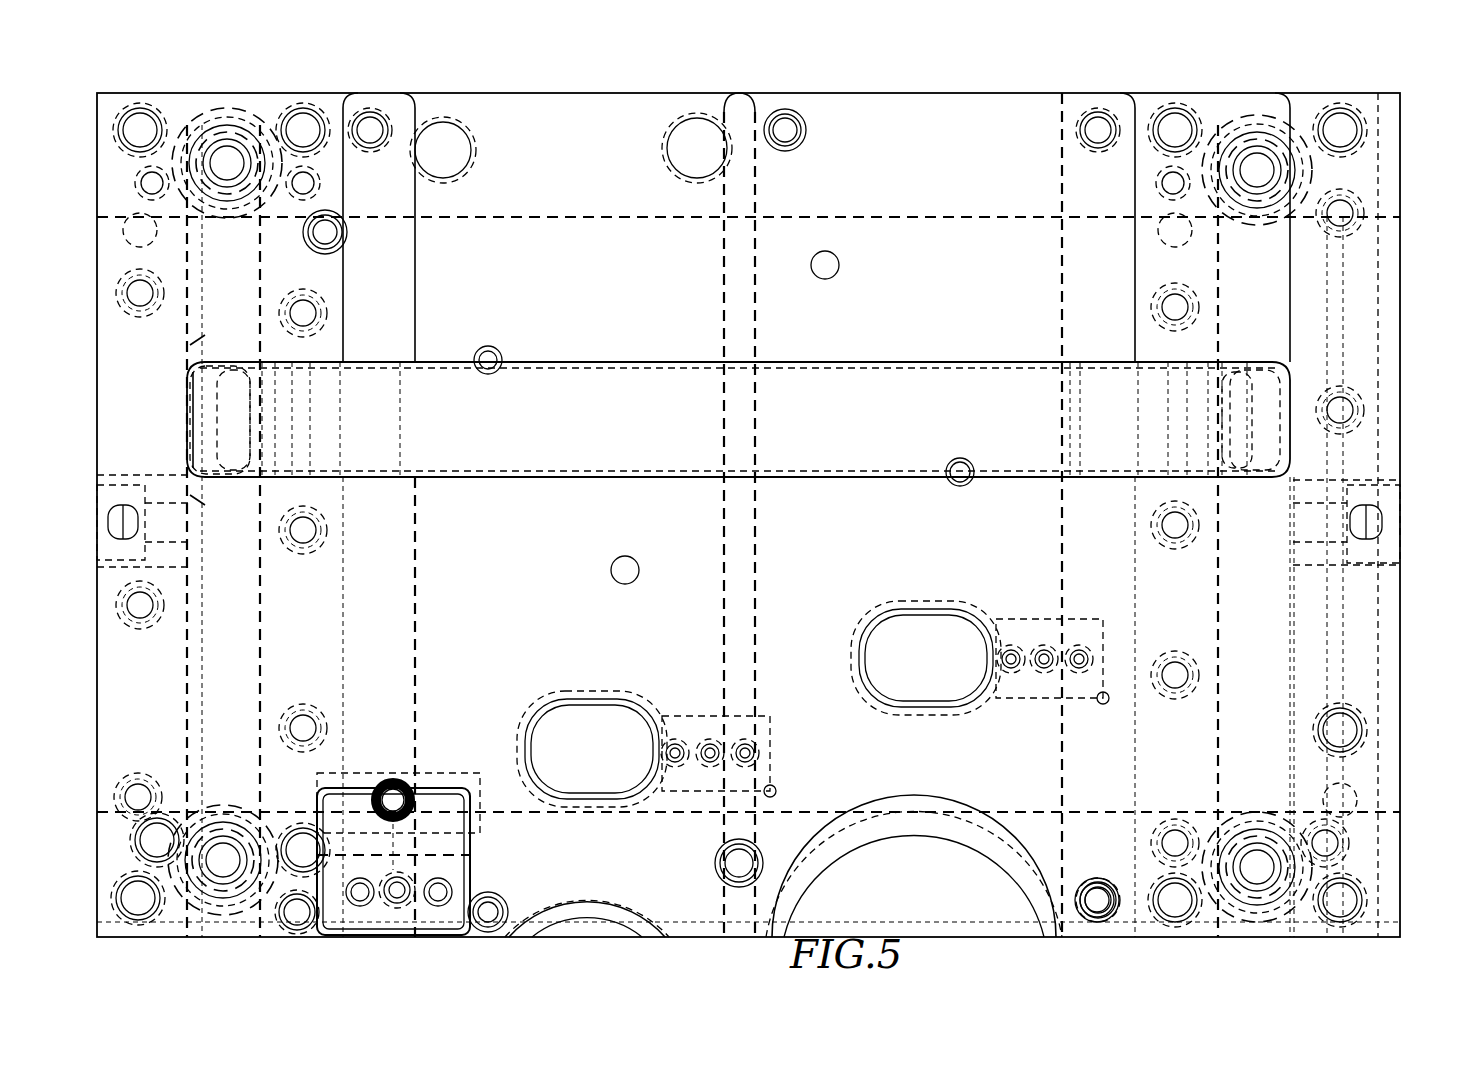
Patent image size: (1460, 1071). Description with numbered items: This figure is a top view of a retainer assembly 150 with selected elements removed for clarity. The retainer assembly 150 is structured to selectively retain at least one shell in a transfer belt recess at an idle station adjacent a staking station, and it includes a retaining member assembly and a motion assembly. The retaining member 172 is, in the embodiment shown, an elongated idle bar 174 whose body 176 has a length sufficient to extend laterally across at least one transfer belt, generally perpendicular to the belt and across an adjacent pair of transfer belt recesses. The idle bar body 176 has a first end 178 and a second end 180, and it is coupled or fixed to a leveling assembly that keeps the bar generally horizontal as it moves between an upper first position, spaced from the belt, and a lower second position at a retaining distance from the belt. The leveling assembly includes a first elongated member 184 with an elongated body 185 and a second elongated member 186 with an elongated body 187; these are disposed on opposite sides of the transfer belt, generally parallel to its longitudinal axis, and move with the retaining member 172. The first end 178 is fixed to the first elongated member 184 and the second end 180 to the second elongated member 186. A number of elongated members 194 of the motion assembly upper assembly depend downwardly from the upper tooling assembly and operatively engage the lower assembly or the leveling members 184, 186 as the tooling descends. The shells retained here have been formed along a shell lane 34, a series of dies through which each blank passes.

The shell lane 34 is at (577, 946).
The retainer assembly 150 is at (188, 440).
The retaining member 172 is at (573, 402).
The idle bar 174 is at (982, 398).
The idle bar body 176 is at (838, 398).
The first end 178 is at (188, 430).
The second end 180 is at (1242, 404).
The first elongated member 184 is at (198, 683).
The elongated body 185 is at (200, 730).
The second elongated member 186 is at (1275, 615).
The elongated body 187 is at (1280, 688).
The elongated members 194 is at (236, 148).